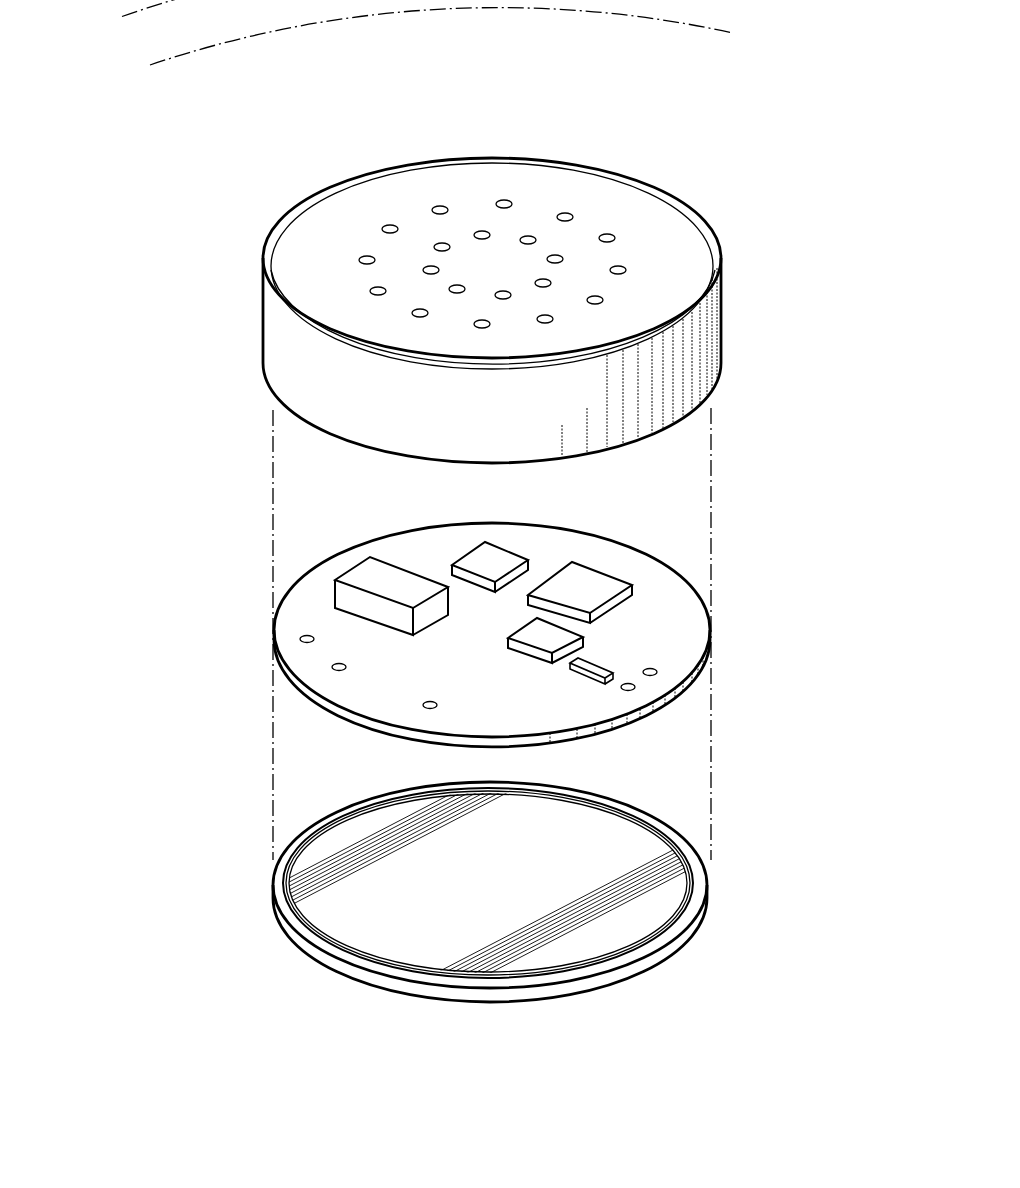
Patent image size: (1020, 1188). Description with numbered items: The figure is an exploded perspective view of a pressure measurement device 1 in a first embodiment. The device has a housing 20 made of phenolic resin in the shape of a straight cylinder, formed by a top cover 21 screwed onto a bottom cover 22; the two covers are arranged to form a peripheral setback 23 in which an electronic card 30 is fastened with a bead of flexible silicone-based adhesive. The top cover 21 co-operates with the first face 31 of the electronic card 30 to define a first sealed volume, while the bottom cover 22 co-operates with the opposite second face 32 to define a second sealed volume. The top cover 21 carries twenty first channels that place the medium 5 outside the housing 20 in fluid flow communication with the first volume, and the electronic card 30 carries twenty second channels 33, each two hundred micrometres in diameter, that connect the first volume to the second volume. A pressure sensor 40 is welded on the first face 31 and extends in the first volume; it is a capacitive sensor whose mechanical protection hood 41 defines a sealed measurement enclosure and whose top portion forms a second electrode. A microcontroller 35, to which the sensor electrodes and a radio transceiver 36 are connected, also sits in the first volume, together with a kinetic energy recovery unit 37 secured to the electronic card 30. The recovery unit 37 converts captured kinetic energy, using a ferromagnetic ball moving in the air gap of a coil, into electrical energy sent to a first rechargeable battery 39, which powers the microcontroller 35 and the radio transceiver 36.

The pressure measurement device 1 is at (185, 389).
The medium 5 is at (427, 76).
The housing 20 is at (262, 253).
The top cover 21 is at (662, 218).
The bottom cover 22 is at (683, 932).
The peripheral setback 23 is at (503, 198).
The electronic card 30 is at (283, 678).
The first face 31 is at (297, 613).
The second face 32 is at (348, 722).
The second channels 33 is at (428, 711).
The microcontroller 35 is at (595, 580).
The radio transceiver 36 is at (478, 555).
The kinetic energy recovery unit 37 is at (523, 632).
The first rechargeable battery 39 is at (584, 671).
The pressure sensor 40 is at (347, 572).
The mechanical protection hood 41 is at (362, 570).